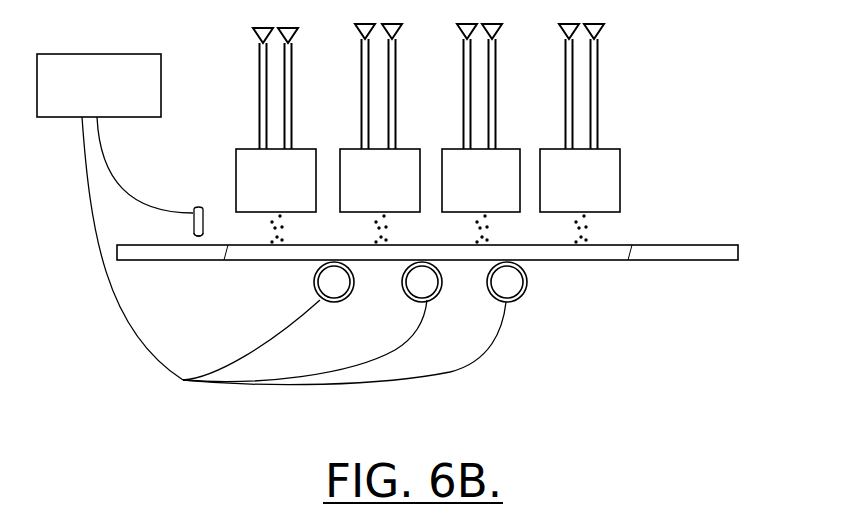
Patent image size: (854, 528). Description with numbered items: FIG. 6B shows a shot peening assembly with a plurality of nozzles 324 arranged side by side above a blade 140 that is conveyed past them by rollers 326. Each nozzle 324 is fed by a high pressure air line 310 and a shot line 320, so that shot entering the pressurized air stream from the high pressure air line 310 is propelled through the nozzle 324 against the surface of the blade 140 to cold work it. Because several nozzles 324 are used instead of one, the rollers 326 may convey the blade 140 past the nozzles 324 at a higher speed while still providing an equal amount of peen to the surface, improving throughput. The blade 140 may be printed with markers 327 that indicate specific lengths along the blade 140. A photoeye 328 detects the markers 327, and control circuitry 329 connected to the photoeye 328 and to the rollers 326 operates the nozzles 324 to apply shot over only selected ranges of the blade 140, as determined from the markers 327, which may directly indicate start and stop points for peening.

The blade 140 is at (737, 246).
The high pressure air line 310 is at (261, 112).
The shot line 320 is at (292, 77).
The nozzle 324 is at (235, 173).
The rollers 326 is at (337, 287).
The markers 327 is at (226, 261).
The photoeye 328 is at (193, 222).
The control circuitry 329 is at (135, 58).